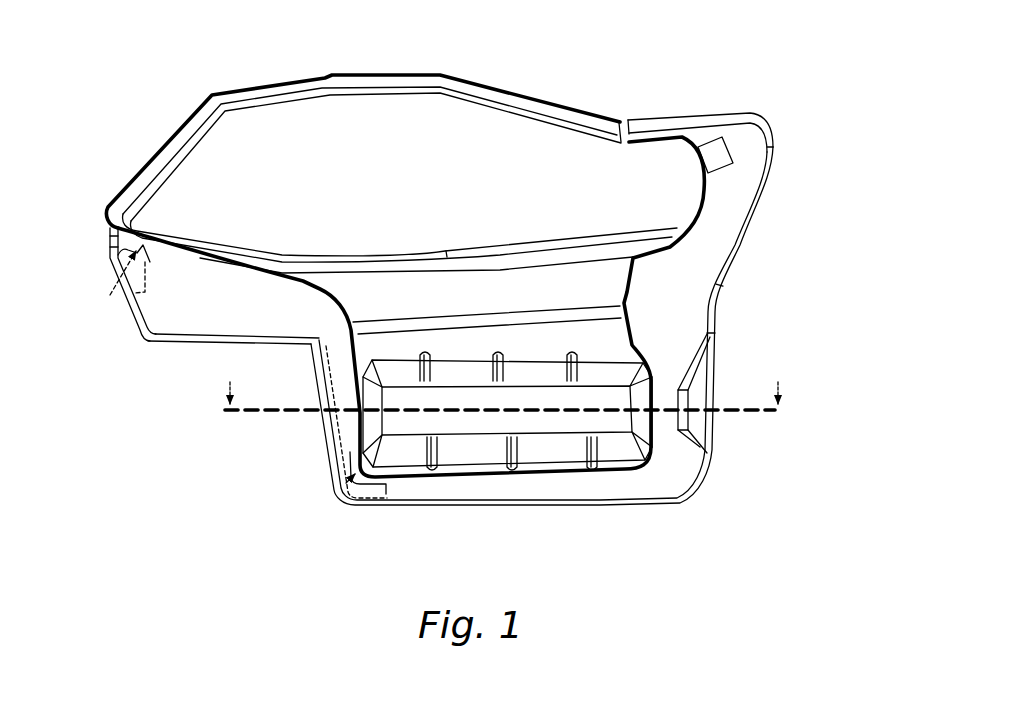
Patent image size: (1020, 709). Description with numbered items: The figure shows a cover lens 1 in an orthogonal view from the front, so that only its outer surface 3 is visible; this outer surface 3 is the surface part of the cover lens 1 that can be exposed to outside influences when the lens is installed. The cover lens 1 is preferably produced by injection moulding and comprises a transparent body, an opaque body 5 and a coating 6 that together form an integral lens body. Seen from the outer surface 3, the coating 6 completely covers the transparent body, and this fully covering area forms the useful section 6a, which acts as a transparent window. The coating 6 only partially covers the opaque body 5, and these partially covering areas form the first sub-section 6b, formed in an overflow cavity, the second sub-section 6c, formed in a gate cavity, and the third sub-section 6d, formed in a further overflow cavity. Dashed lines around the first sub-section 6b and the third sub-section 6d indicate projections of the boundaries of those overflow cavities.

The cover lens 1 is at (794, 508).
The outer surface 3 is at (557, 278).
The opaque body 5 is at (728, 216).
The coating 6 is at (492, 138).
The useful section 6a is at (570, 425).
The first sub-section 6b is at (340, 490).
The second sub-section 6c is at (720, 146).
The third sub-section 6d is at (122, 283).